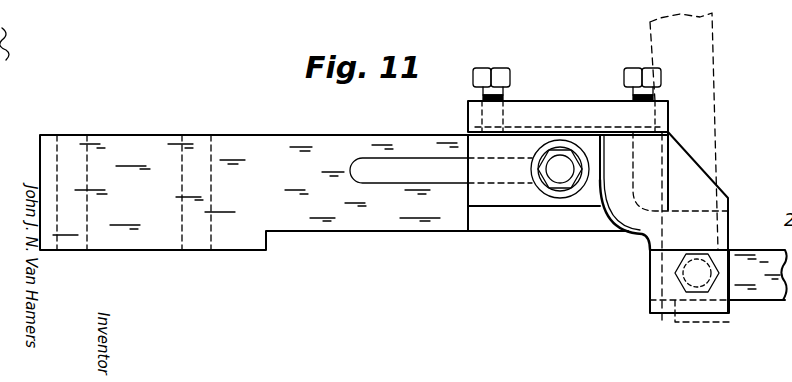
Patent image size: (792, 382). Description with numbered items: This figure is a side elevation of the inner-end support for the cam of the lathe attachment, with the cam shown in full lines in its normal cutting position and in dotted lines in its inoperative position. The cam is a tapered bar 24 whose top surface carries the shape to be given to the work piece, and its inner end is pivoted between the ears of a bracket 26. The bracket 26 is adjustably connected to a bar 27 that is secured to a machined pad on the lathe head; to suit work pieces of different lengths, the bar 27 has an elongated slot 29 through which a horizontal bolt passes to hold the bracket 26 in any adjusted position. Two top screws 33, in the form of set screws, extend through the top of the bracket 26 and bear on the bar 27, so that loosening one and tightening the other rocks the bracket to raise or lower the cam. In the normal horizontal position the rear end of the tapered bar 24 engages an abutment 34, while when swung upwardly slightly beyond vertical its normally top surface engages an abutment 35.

The tapered bar 24 is at (712, 108).
The bracket 26 is at (505, 198).
The bar 27 is at (354, 192).
The elongated slot 29 is at (398, 178).
The top screws 33 is at (626, 75).
The abutment 34 is at (648, 247).
The abutment 35 is at (630, 232).